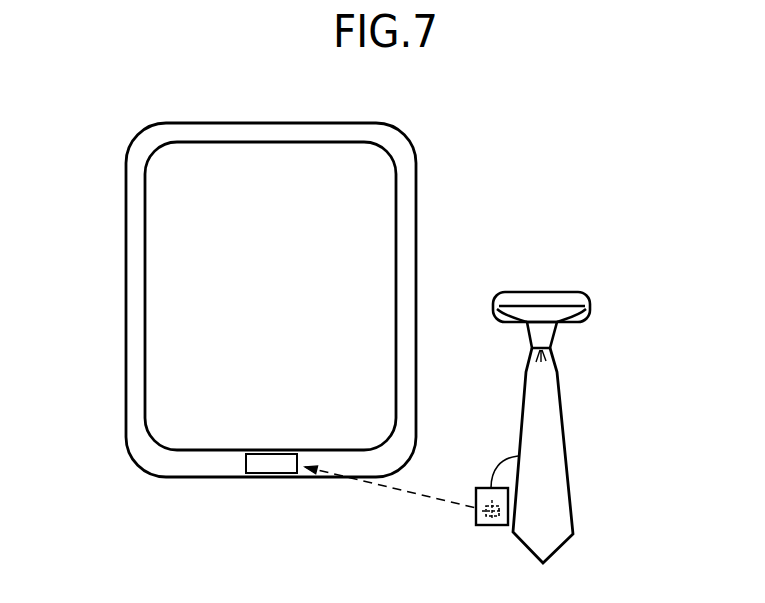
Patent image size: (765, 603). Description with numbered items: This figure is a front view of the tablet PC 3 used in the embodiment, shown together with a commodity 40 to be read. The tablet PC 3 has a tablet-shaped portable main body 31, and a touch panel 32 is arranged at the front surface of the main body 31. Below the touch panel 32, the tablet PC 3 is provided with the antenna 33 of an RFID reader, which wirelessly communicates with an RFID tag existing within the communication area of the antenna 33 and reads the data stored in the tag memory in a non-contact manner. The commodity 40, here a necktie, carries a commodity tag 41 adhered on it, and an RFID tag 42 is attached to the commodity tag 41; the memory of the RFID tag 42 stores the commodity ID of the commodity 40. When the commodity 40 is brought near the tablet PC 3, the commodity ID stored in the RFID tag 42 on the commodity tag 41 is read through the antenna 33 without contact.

The tablet PC 3 is at (261, 304).
The main body 31 is at (407, 188).
The touch panel 32 is at (152, 294).
The antenna 33 is at (268, 473).
The commodity 40 is at (553, 395).
The commodity tag 41 is at (483, 495).
The RFID tag 42 is at (490, 525).